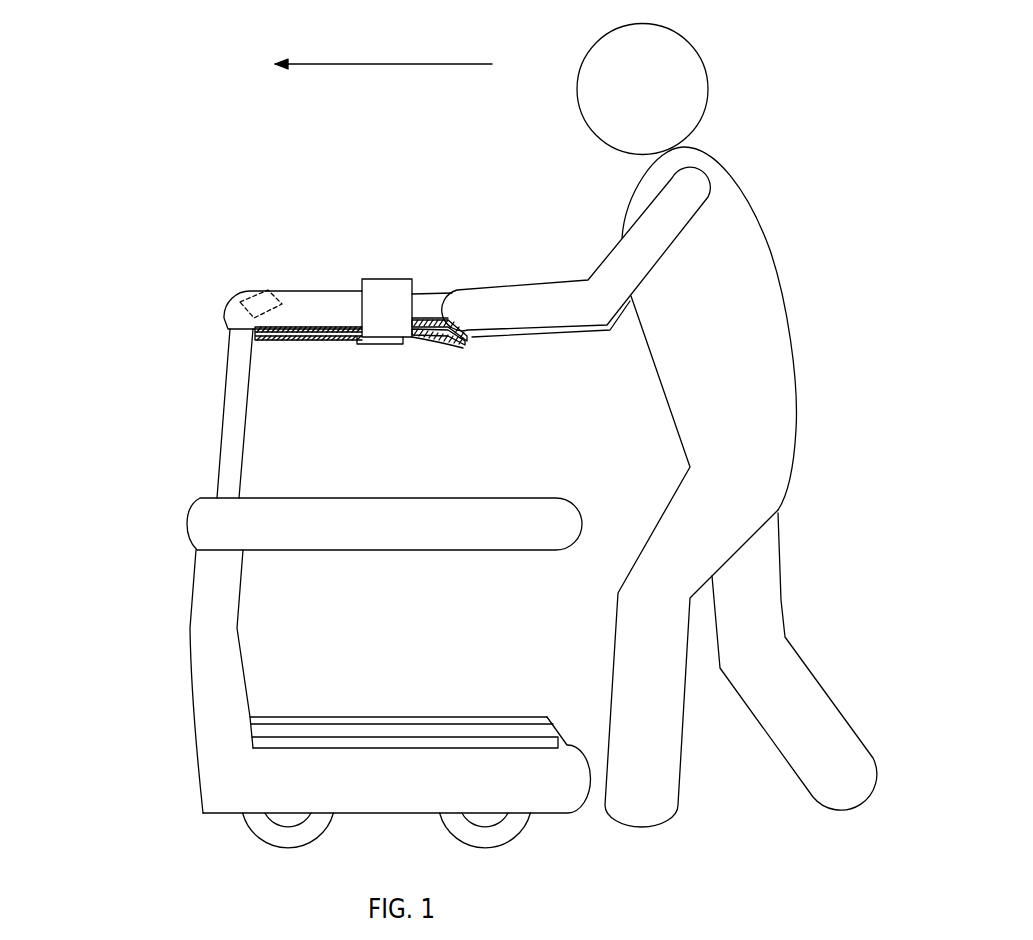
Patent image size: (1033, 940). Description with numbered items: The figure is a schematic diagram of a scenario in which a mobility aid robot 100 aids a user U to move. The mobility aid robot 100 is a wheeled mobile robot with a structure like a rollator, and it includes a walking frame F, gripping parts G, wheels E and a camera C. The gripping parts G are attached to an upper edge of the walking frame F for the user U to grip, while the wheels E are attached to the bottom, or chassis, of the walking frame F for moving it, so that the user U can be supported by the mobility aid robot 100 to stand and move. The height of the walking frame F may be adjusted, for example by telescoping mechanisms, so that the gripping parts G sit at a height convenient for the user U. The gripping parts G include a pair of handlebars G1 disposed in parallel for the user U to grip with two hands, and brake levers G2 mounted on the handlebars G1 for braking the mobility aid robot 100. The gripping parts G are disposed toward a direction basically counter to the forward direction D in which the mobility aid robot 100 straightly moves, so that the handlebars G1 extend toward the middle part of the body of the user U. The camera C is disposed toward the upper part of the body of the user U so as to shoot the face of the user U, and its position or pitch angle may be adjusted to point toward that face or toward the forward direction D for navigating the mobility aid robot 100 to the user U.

The forward direction D is at (383, 54).
The user U is at (737, 170).
The mobility aid robot 100 is at (225, 303).
The walking frame F is at (220, 443).
The camera C is at (267, 288).
The gripping part G is at (385, 278).
The handlebar G1 is at (423, 300).
The brake lever G2 is at (430, 338).
The wheel E is at (267, 838).